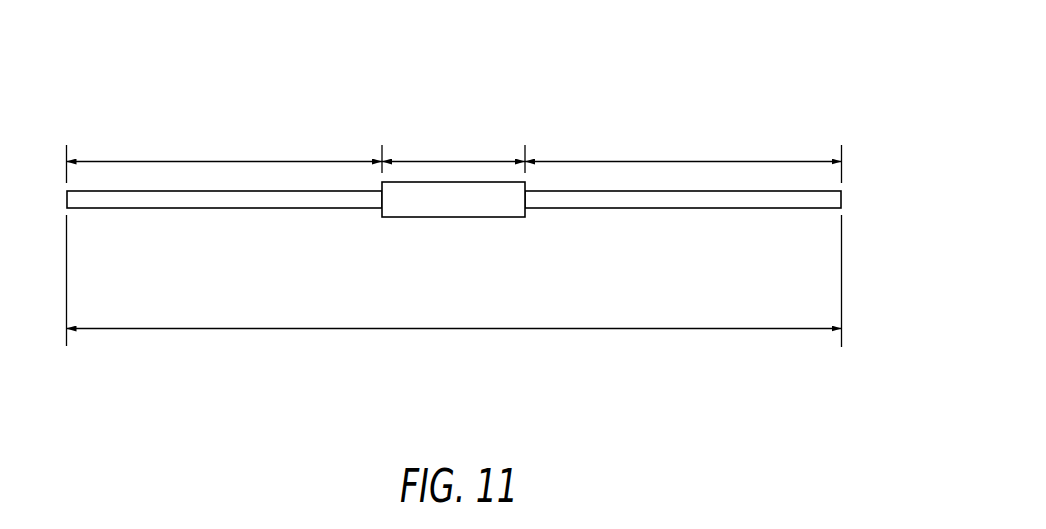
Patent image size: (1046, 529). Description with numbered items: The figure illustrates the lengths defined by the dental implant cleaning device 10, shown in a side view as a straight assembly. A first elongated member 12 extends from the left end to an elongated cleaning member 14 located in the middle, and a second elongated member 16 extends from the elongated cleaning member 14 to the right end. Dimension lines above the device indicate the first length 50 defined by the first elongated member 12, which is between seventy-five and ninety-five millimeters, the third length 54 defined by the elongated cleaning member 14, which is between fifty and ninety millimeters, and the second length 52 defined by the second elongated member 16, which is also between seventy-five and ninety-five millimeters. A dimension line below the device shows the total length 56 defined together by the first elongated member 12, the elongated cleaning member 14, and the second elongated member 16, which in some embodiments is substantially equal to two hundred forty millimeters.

The dental implant cleaning device 10 is at (454, 168).
The first elongated member 12 is at (125, 208).
The elongated cleaning member 14 is at (440, 205).
The second elongated member 16 is at (595, 208).
The first length 50 is at (225, 161).
The second length 52 is at (687, 161).
The third length 54 is at (457, 161).
The total length 56 is at (450, 330).